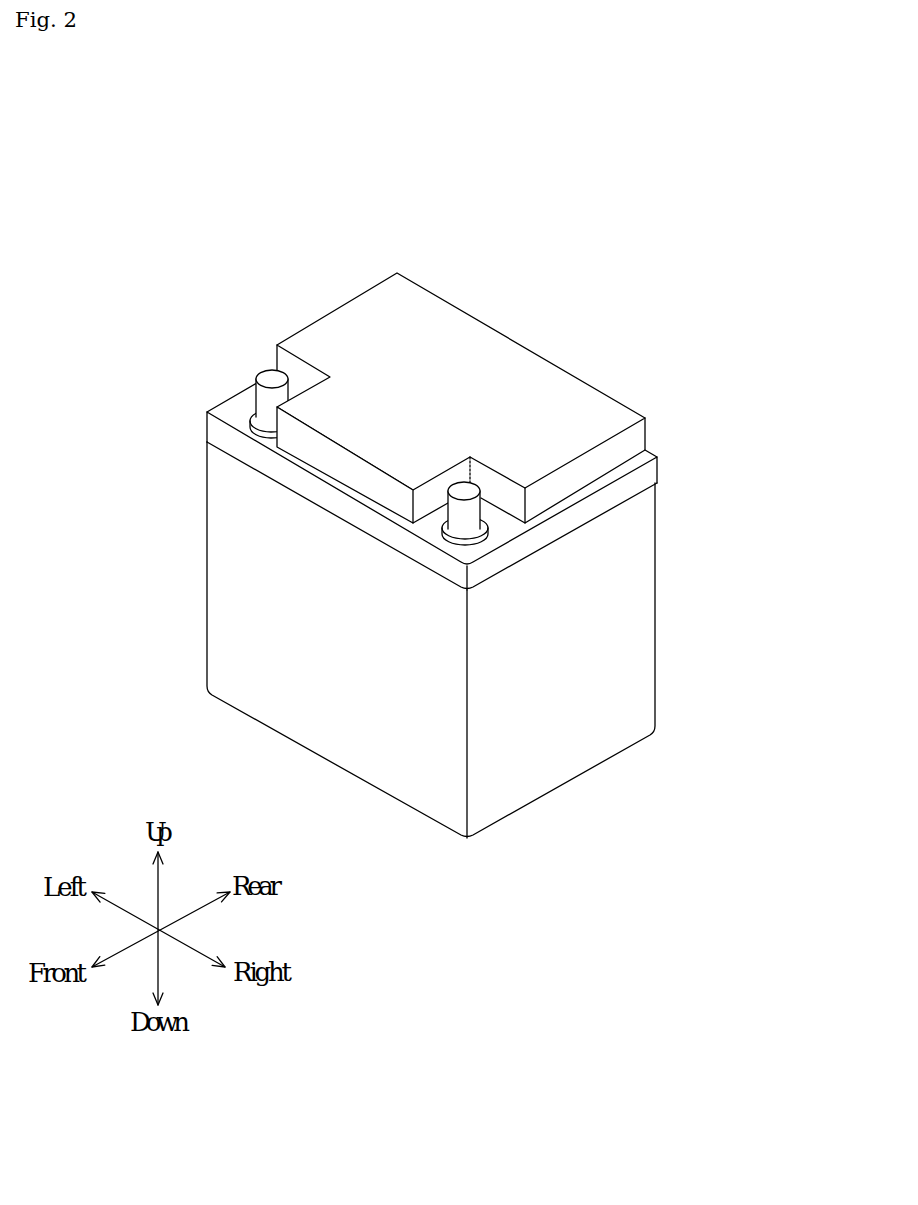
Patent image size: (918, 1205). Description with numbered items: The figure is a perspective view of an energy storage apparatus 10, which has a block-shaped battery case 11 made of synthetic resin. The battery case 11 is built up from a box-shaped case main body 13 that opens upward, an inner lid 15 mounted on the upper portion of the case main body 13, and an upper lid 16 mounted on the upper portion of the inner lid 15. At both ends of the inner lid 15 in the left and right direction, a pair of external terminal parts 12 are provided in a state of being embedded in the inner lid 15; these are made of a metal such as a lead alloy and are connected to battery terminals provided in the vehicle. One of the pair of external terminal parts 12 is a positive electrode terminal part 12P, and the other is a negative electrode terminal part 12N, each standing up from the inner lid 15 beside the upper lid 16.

The energy storage apparatus 10 is at (553, 335).
The battery case 11 is at (736, 395).
The external terminal parts 12 is at (409, 430).
The positive electrode terminal part 12P is at (265, 398).
The negative electrode terminal part 12N is at (470, 488).
The case main body 13 is at (643, 538).
The inner lid 15 is at (640, 477).
The upper lid 16 is at (640, 440).